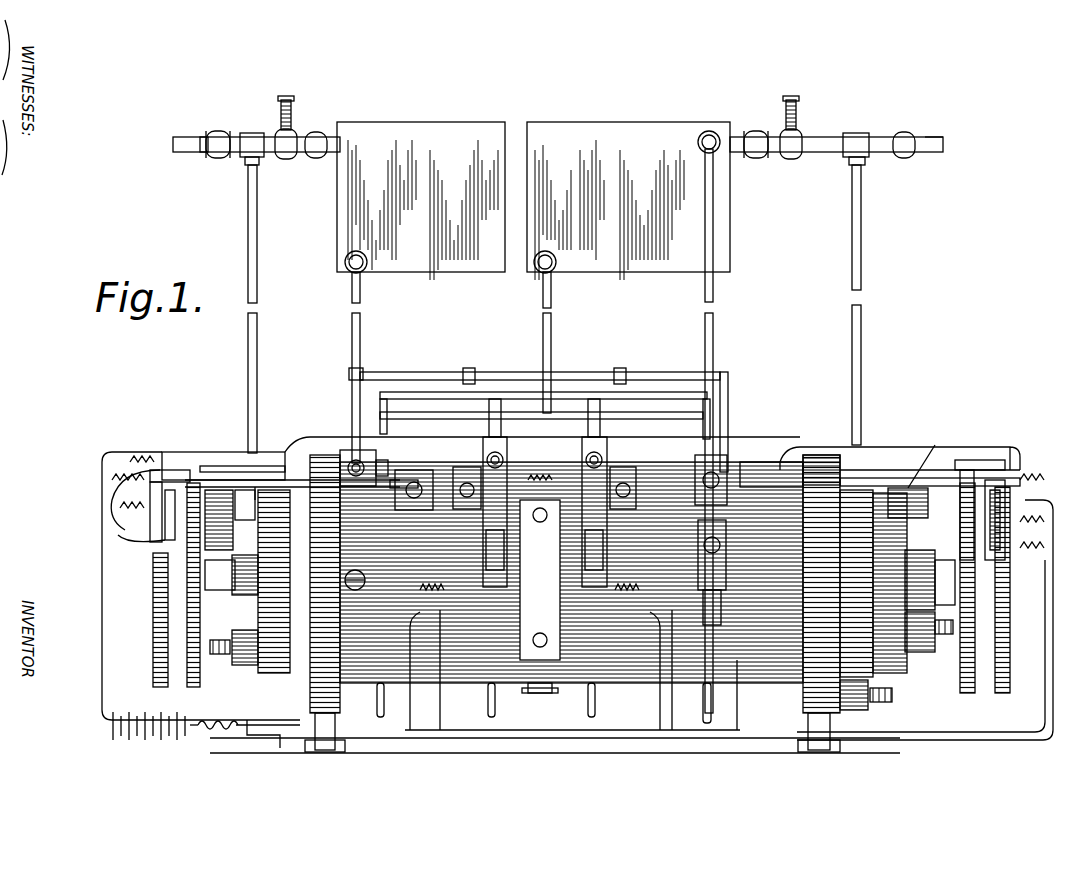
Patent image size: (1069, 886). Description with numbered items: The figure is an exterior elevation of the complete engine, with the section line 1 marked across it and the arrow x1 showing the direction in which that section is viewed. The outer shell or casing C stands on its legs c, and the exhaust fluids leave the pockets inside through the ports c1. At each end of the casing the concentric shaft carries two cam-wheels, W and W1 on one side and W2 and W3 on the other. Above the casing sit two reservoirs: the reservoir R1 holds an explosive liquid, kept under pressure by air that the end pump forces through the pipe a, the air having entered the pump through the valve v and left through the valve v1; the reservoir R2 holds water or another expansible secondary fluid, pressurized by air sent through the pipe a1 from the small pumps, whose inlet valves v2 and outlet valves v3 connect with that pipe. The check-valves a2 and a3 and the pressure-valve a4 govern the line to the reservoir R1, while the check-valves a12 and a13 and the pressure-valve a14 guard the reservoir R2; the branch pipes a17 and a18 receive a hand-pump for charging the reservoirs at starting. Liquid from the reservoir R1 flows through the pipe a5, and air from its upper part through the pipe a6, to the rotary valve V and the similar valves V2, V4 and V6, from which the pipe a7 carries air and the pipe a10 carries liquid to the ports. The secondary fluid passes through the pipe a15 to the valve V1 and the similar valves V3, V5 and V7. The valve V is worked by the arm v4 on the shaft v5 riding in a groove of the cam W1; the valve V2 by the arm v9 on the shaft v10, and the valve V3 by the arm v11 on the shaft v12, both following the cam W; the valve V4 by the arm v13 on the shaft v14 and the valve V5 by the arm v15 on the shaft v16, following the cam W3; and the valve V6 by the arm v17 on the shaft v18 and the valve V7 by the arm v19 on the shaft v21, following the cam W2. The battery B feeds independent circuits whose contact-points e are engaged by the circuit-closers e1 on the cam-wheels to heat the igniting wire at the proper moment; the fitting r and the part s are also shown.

The pipe a is at (861, 350).
The pipe a1 is at (258, 360).
The check-valve a2 is at (754, 130).
The check-valve a3 is at (905, 130).
The pressure-valve a4 is at (795, 140).
The pipe a5 is at (551, 330).
The pipe a6 is at (713, 300).
The pipe a7 is at (384, 712).
The pipe a10 is at (440, 372).
The check-valve a12 is at (220, 130).
The check-valve a13 is at (318, 130).
The pressure-valve a14 is at (286, 160).
The pipe a15 is at (360, 330).
The pipe a17 is at (930, 140).
The pipe a18 is at (190, 152).
The reservoir R1 is at (632, 140).
The reservoir R2 is at (400, 140).
The rotary valve V is at (414, 470).
The valve V1 is at (350, 450).
The valve V2 is at (507, 450).
The valve V3 is at (462, 467).
The valve V4 is at (582, 450).
The valve V5 is at (625, 467).
The valve V6 is at (695, 480).
The valve V7 is at (726, 545).
The casing C is at (575, 584).
The legs c is at (320, 722).
The ports c1 is at (572, 644).
The battery B is at (130, 745).
The cam-wheel W is at (153, 620).
The cam-wheel W1 is at (187, 655).
The cam-wheel W2 is at (967, 693).
The cam-wheel W3 is at (1002, 693).
The valve v is at (850, 690).
The valve v1 is at (880, 488).
The inlet valve v2 is at (240, 585).
The outlet valve v3 is at (240, 490).
The arm v4 is at (205, 545).
The shaft v5 is at (225, 466).
The arm v9 is at (140, 458).
The shaft v10 is at (258, 485).
The arm v11 is at (112, 480).
The shaft v12 is at (262, 478).
The arm v13 is at (1005, 480).
The shaft v14 is at (850, 470).
The arm v15 is at (1030, 476).
The shaft v16 is at (790, 470).
The arm v17 is at (980, 460).
The shaft v18 is at (790, 462).
The arm v19 is at (965, 545).
The shaft v21 is at (858, 486).
The contact-points e is at (118, 528).
The circuit-closers e1 is at (160, 470).
The arrow x1 is at (80, 512).
The screw s is at (355, 593).
The fitting r is at (540, 693).
The section line 1 is at (555, 755).